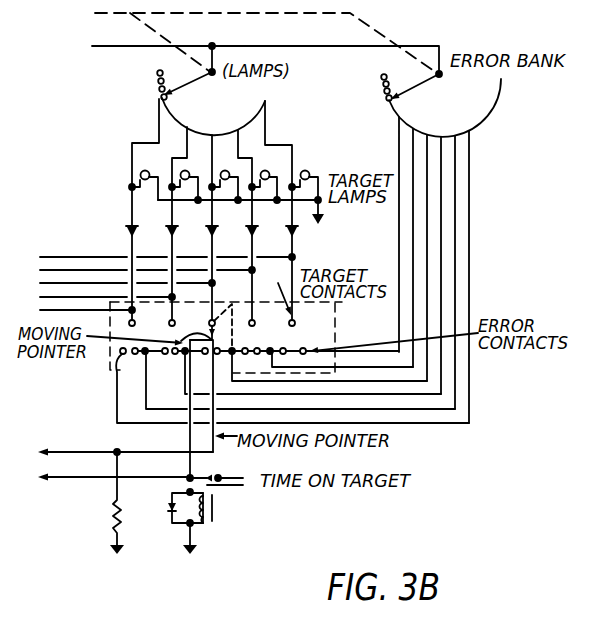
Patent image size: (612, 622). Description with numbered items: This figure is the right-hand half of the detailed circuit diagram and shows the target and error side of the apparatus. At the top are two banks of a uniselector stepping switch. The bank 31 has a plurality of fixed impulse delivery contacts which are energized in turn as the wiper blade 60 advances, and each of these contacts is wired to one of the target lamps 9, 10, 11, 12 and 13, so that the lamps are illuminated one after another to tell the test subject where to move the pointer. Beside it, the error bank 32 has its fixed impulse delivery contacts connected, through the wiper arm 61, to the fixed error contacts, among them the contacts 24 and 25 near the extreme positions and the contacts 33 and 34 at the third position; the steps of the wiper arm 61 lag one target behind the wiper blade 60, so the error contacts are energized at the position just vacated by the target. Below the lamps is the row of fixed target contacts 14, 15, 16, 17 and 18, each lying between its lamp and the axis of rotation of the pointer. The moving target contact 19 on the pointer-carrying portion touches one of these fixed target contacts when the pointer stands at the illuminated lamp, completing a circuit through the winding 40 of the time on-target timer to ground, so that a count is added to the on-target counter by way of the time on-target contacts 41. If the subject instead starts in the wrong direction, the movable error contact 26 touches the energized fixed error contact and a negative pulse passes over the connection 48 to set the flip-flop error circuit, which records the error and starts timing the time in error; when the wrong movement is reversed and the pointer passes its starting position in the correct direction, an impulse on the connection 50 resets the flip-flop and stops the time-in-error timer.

The target lamp 9 is at (154, 168).
The target lamp 10 is at (207, 168).
The target lamp 11 is at (234, 168).
The target lamp 12 is at (281, 168).
The target lamp 13 is at (309, 176).
The fixed target contact 14 is at (142, 318).
The fixed target contact 15 is at (175, 322).
The fixed target contact 16 is at (214, 320).
The fixed target contact 17 is at (255, 322).
The fixed target contact 18 is at (295, 322).
The moving target contact 19 is at (188, 401).
The fixed error contact 24 is at (292, 385).
The fixed error contact 25 is at (310, 349).
The movable error contact 26 is at (204, 355).
The bank of the stepping switch 31 is at (266, 100).
The error bank of the stepping switch 32 is at (501, 79).
The fixed error contact 33 is at (184, 366).
The fixed error contact 34 is at (232, 347).
The winding of the time on-target timer 40 is at (212, 520).
The time on-target contacts 41 is at (212, 476).
The connection 48 is at (48, 450).
The connection 50 is at (44, 480).
The wiper blade 60 is at (197, 77).
The wiper arm 61 is at (421, 83).